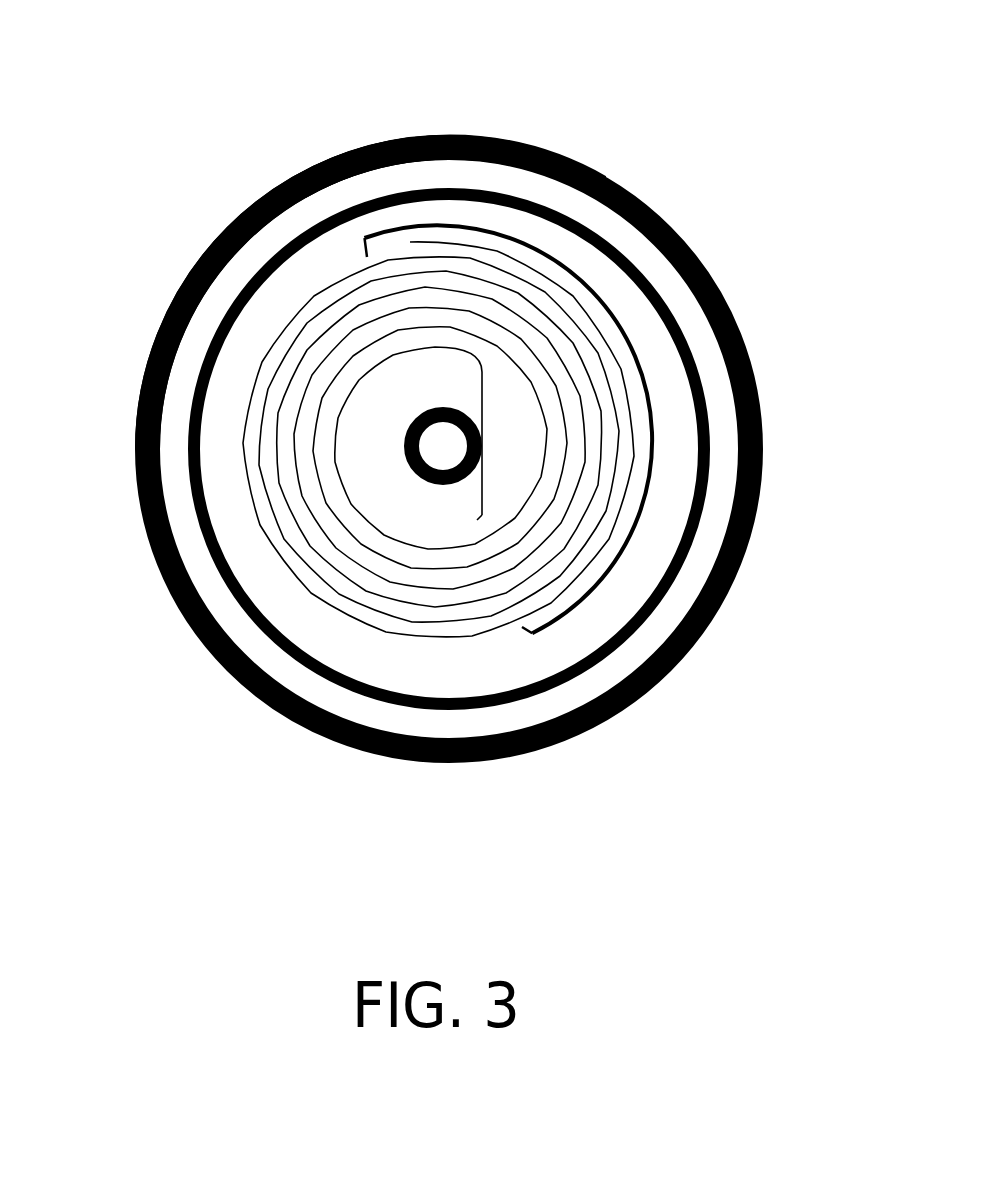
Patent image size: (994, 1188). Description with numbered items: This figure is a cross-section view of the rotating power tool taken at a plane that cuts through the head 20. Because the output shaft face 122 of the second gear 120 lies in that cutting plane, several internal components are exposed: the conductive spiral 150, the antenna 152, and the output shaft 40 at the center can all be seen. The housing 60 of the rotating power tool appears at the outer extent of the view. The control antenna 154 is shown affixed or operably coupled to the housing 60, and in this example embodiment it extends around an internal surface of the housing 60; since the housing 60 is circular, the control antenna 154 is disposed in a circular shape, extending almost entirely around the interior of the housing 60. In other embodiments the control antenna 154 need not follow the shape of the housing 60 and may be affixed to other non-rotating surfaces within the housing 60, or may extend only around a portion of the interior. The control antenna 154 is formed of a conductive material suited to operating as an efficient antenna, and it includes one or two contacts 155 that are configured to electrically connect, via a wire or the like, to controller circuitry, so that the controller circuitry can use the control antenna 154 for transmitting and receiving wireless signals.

The head 20 is at (435, 380).
The output shaft 40 is at (420, 480).
The housing 60 is at (350, 150).
The second gear 120 is at (580, 213).
The output shaft face 122 is at (245, 348).
The conductive spiral 150 is at (265, 485).
The antenna 152 is at (617, 318).
The control antenna 154 is at (727, 298).
The contacts 155 is at (455, 137).